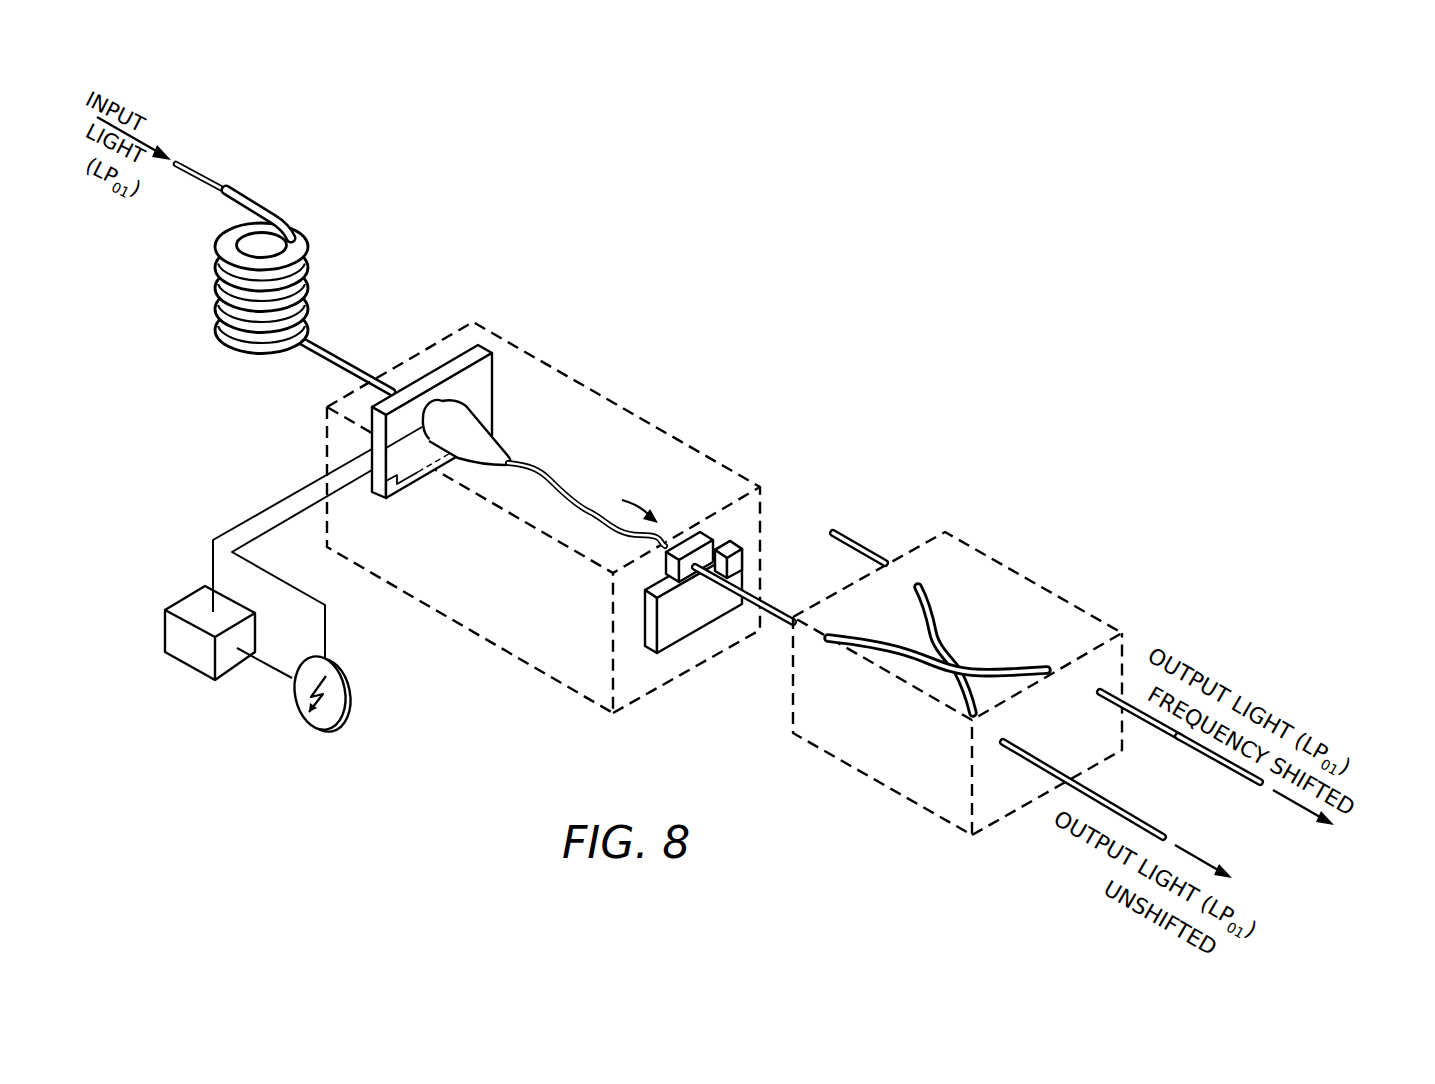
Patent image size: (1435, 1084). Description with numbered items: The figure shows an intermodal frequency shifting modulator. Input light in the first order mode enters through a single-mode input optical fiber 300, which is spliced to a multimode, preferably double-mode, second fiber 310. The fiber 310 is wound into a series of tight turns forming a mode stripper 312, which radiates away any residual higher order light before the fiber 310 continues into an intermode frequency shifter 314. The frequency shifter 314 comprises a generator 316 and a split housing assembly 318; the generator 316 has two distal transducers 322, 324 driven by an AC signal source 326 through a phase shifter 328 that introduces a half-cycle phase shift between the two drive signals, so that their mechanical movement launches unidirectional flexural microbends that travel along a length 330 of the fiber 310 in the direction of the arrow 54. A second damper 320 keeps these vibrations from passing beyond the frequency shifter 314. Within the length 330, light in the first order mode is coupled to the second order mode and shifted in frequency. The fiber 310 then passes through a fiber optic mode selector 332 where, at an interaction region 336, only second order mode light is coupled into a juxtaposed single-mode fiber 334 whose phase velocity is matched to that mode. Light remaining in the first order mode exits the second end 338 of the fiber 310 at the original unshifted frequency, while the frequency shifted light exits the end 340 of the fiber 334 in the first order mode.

The input optical fiber 300 is at (202, 176).
The mode stripper 312 is at (291, 233).
The second fiber 310 is at (333, 348).
The distal transducer 322 is at (457, 401).
The intermode frequency shifter 314 is at (615, 389).
The split housing assembly 318 is at (668, 433).
The generator 316 is at (492, 420).
The distal transducer 324 is at (447, 463).
The length of the fiber 330 is at (568, 500).
The arrow 54 is at (625, 497).
The second damper 320 is at (700, 619).
The phase shifter 328 is at (193, 598).
The AC signal source 326 is at (338, 669).
The fiber optic mode selector 332 is at (1027, 578).
The interaction region 336 is at (960, 651).
The single-mode fiber 334 is at (1104, 692).
The second end of the fiber 338 is at (1143, 818).
The end of the fiber 340 is at (1242, 774).